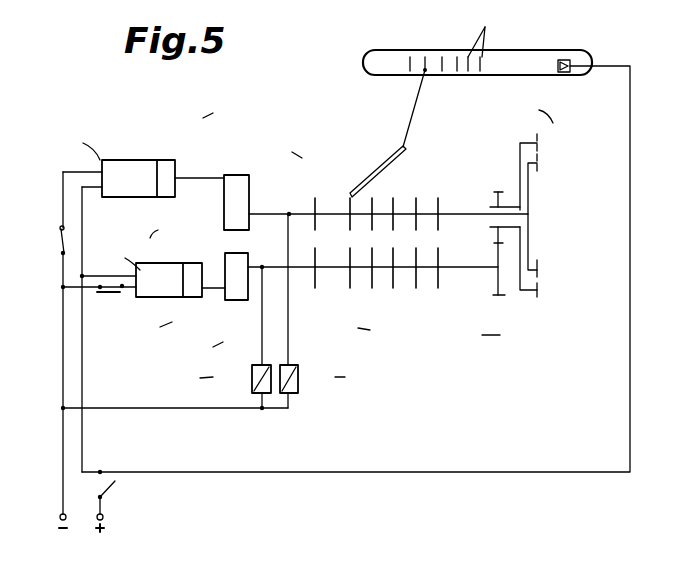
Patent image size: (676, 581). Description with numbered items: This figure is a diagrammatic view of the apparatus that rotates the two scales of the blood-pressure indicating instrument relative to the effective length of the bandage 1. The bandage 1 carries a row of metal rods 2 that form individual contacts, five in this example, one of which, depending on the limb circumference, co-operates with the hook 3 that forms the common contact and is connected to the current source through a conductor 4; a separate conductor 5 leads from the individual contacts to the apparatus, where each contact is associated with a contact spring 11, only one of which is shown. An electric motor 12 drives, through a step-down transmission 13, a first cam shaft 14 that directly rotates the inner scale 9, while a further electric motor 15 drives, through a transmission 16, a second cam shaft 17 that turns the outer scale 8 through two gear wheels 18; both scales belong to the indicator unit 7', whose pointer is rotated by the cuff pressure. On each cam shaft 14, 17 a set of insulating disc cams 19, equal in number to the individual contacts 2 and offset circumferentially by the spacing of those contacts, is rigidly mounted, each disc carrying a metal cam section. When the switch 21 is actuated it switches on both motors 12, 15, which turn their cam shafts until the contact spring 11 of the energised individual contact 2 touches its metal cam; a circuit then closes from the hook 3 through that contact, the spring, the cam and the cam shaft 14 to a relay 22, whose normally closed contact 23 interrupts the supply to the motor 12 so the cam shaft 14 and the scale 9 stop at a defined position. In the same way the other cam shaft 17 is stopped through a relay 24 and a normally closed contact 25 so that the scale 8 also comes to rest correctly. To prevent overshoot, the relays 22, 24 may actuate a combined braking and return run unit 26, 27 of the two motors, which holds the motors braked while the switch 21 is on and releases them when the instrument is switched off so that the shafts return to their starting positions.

The bandage 1 is at (510, 57).
The metal rods 2 is at (457, 57).
The hook 3 is at (563, 60).
The conductor 4 is at (630, 115).
The conductor 5 is at (413, 116).
The indicator unit 7' is at (571, 225).
The outer scale 8 is at (538, 137).
The inner scale 9 is at (577, 187).
The contact spring 11 is at (378, 169).
The electric motor 12 is at (128, 195).
The step-down transmission 13 is at (230, 219).
The first cam shaft 14 is at (265, 212).
The electric motor 15 is at (162, 295).
The transmission 16 is at (238, 292).
The second cam shaft 17 is at (277, 272).
The gear wheels 18 is at (498, 232).
The disc cams 19 is at (315, 198).
The switch 21 is at (122, 506).
The relay 22 is at (300, 369).
The normally closed contact 23 is at (60, 240).
The relay 24 is at (252, 375).
The normally closed contact 25 is at (99, 301).
The braking and return run unit 26 is at (172, 167).
The braking and return run unit 27 is at (195, 290).